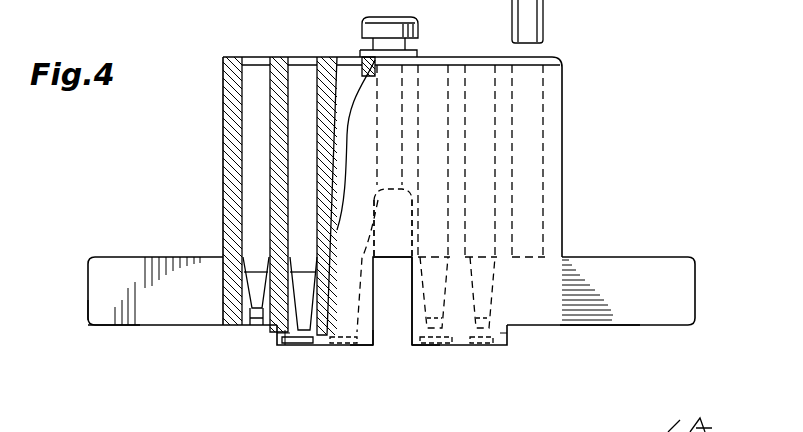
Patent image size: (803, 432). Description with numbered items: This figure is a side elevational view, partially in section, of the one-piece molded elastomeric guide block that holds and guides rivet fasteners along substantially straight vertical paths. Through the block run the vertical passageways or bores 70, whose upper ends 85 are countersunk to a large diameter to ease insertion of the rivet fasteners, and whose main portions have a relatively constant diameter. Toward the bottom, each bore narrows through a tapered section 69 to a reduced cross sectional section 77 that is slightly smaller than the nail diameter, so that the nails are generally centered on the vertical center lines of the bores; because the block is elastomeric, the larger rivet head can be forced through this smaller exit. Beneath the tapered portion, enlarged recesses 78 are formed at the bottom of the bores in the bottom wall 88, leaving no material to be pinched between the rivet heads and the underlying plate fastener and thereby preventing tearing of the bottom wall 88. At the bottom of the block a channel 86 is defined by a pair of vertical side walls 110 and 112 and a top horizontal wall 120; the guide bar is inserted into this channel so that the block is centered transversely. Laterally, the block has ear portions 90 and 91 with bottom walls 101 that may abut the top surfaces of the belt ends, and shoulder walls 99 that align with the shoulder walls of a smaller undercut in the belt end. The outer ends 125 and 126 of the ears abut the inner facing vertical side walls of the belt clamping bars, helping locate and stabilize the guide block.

The tapered section 69 is at (223, 255).
The vertical passageways or bores 70 is at (298, 130).
The reduced cross sectional section 77 is at (227, 308).
The enlarged recesses 78 is at (300, 347).
The upper ends of the bores 85 is at (333, 57).
The channel 86 is at (393, 262).
The bottom wall 88 is at (412, 350).
The guide block ear 90 is at (128, 232).
The guide block ear 91 is at (658, 272).
The shoulder walls 99 is at (276, 343).
The bottom walls 101 is at (122, 327).
The vertical side wall 110 is at (372, 347).
The vertical side wall 112 is at (398, 347).
The top horizontal wall 120 is at (385, 253).
The outer end 125 is at (86, 297).
The outer end 126 is at (697, 257).